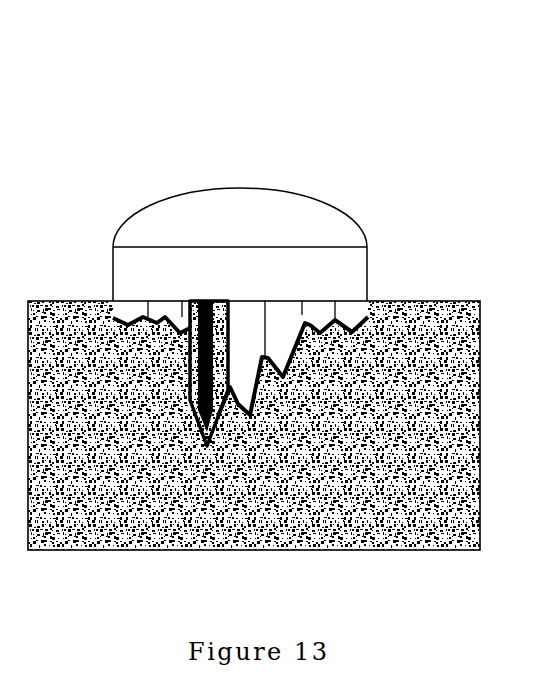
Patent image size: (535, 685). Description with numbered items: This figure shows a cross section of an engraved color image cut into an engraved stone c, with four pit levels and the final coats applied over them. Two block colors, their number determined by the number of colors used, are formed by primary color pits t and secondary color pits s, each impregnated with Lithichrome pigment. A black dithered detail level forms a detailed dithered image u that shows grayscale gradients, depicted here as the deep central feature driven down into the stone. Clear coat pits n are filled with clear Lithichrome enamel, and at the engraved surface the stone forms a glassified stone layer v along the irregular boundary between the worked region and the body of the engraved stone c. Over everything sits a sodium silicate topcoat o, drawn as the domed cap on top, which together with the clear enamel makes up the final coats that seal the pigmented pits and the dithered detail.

The clear coat pits n is at (142, 275).
The primary color pits t is at (252, 348).
The secondary color pits s is at (279, 328).
The detailed dithered image u is at (212, 301).
The sodium silicate topcoat o is at (337, 223).
The glassified stone layer v is at (368, 317).
The engraved stone c is at (380, 435).